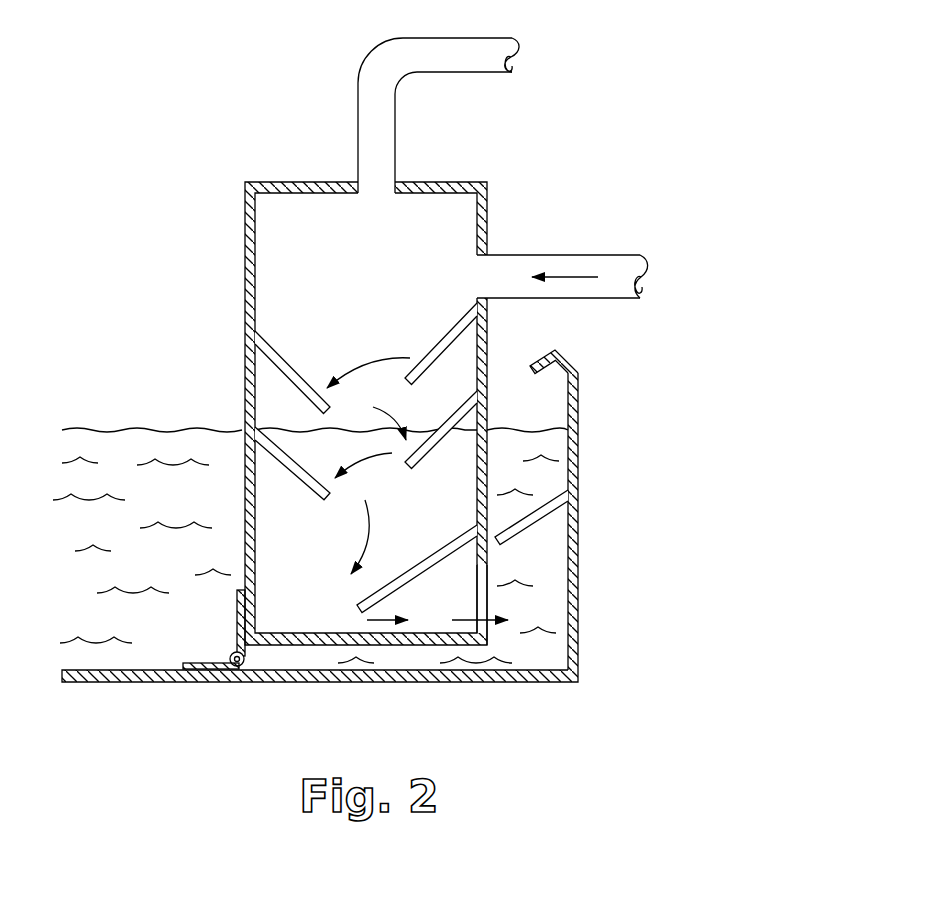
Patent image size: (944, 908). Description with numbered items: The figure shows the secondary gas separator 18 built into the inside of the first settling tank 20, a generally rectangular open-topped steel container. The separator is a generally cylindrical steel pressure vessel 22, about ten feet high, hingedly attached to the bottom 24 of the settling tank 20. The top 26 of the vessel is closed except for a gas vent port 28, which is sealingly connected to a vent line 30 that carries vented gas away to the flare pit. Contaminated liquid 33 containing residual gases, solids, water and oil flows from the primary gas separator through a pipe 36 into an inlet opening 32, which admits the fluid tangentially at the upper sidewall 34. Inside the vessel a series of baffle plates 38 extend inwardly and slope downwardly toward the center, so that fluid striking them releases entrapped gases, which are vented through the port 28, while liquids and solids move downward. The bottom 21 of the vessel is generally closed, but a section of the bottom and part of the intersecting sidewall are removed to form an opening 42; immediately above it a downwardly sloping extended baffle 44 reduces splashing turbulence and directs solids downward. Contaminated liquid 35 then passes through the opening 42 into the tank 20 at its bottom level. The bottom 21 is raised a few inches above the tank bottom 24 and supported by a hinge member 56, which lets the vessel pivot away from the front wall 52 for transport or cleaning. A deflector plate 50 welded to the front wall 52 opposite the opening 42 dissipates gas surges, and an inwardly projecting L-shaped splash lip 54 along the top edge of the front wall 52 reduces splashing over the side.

The secondary gas separator 18 is at (196, 206).
The first settling tank 20 is at (600, 422).
The bottom of vessel 21 is at (305, 633).
The pressure vessel 22 is at (246, 262).
The bottom of settling tank 24 is at (263, 682).
The top of vessel 26 is at (294, 182).
The gas vent port 28 is at (387, 193).
The vent line 30 is at (463, 43).
The inlet opening 32 is at (477, 270).
The contaminated liquid 33 is at (413, 350).
The upper sidewall 34 is at (487, 322).
The contaminated liquid 35 is at (388, 618).
The pipe 36 is at (618, 255).
The baffle plates 38 is at (296, 455).
The opening 42 is at (488, 596).
The extended baffle 44 is at (427, 562).
The deflector plate 50 is at (536, 527).
The front wall 52 is at (580, 465).
The splash lip 54 is at (566, 352).
The hinge member 56 is at (237, 647).